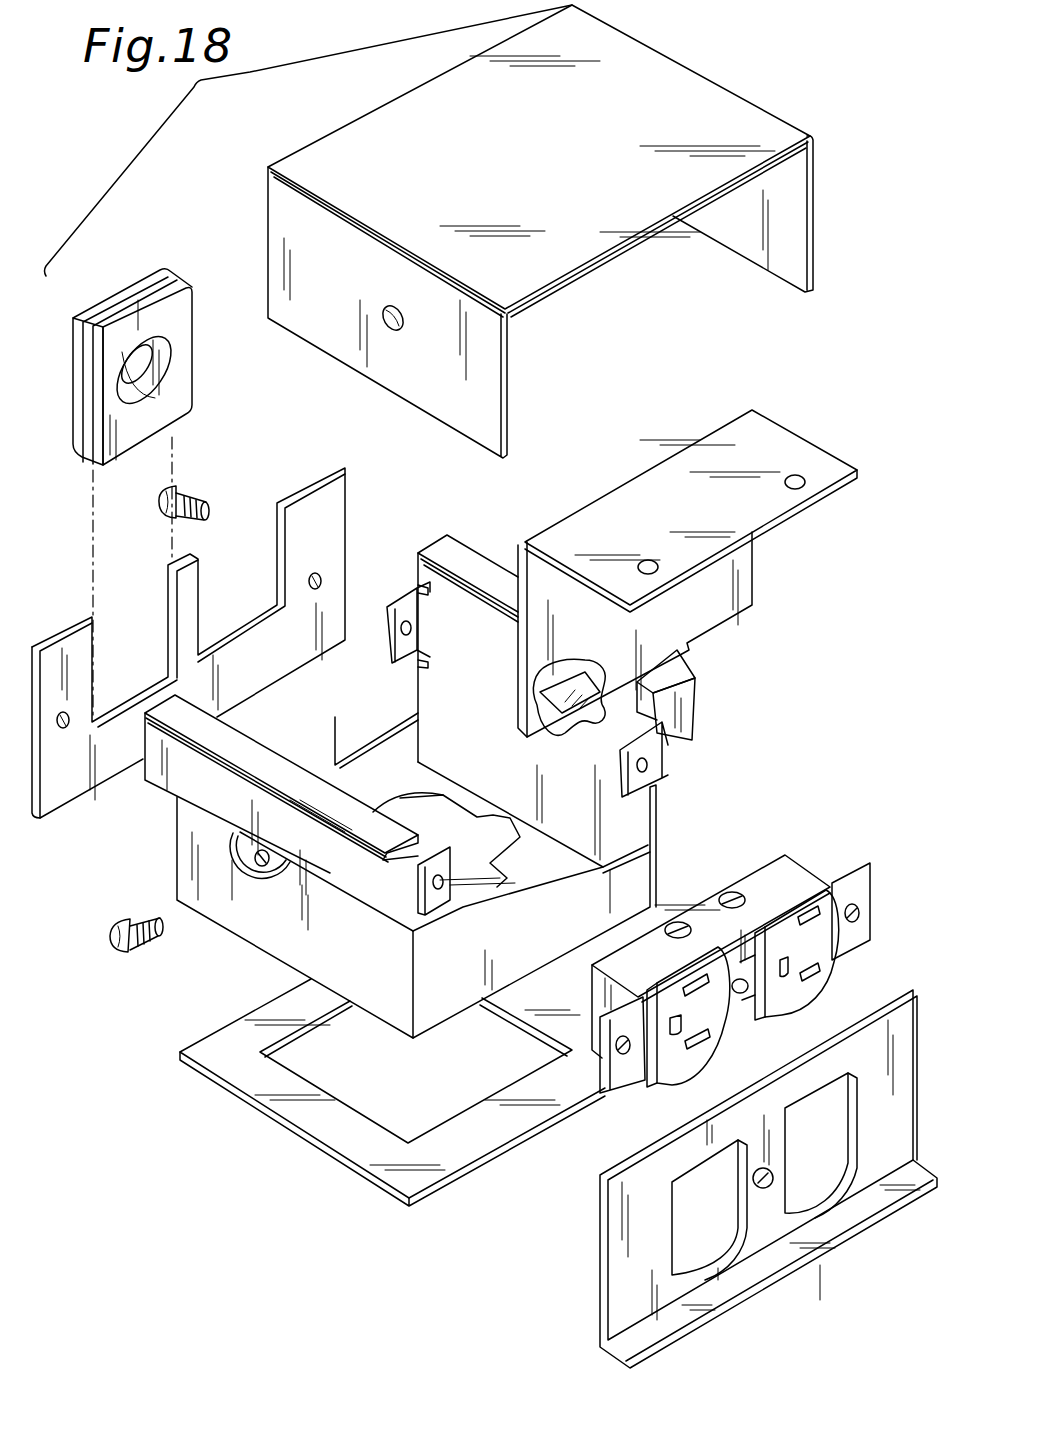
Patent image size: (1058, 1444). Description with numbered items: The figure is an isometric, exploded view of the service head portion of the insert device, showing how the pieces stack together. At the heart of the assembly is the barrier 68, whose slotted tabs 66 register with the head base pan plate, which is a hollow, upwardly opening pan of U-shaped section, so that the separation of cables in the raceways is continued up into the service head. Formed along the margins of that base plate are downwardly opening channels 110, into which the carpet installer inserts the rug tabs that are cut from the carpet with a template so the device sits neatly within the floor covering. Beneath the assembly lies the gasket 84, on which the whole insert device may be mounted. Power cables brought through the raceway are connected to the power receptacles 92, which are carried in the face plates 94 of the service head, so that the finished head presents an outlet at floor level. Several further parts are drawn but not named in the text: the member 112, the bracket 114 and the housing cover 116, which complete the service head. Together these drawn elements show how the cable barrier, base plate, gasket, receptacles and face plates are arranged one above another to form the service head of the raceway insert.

The slotted tabs 66 is at (567, 698).
The barrier 68 is at (688, 629).
The gasket 84 is at (488, 1147).
The power receptacles 92 is at (785, 1005).
The face plates 94 is at (623, 1222).
The downwardly opening channels 110 is at (258, 752).
The clamp block 112 is at (181, 370).
The bracket plate 114 is at (333, 515).
The housing cover 116 is at (562, 163).